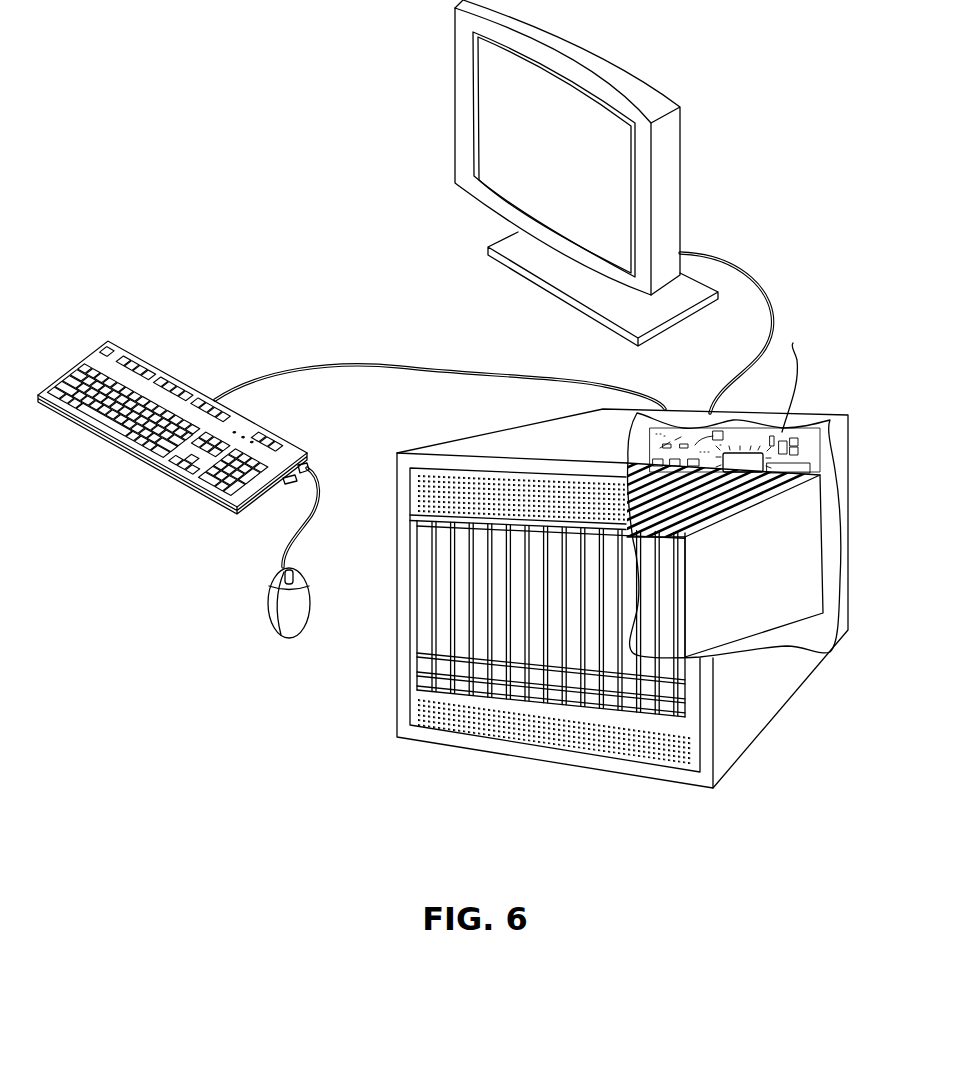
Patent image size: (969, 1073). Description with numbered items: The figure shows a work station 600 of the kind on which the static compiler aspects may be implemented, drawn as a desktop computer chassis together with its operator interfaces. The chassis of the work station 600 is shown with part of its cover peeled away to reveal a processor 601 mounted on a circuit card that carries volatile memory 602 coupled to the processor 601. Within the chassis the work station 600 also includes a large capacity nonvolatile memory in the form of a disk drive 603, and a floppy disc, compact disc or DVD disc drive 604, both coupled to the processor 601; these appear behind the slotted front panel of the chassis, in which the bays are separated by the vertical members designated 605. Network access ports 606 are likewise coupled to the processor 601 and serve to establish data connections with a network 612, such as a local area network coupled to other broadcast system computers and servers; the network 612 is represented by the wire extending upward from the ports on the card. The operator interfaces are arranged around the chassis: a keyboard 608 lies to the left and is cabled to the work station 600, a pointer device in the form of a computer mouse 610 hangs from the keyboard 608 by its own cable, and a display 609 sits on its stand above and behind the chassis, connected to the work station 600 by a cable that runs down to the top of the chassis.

The work station 600 is at (486, 433).
The processor 601 is at (651, 461).
The volatile memory 602 is at (804, 468).
The disk drive 603 is at (457, 570).
The disc drive 604 is at (421, 625).
The front panel slots 605 is at (440, 597).
The network access ports 606 is at (742, 462).
The keyboard 608 is at (171, 376).
The display 609 is at (681, 198).
The computer mouse 610 is at (278, 634).
The network 612 is at (800, 352).